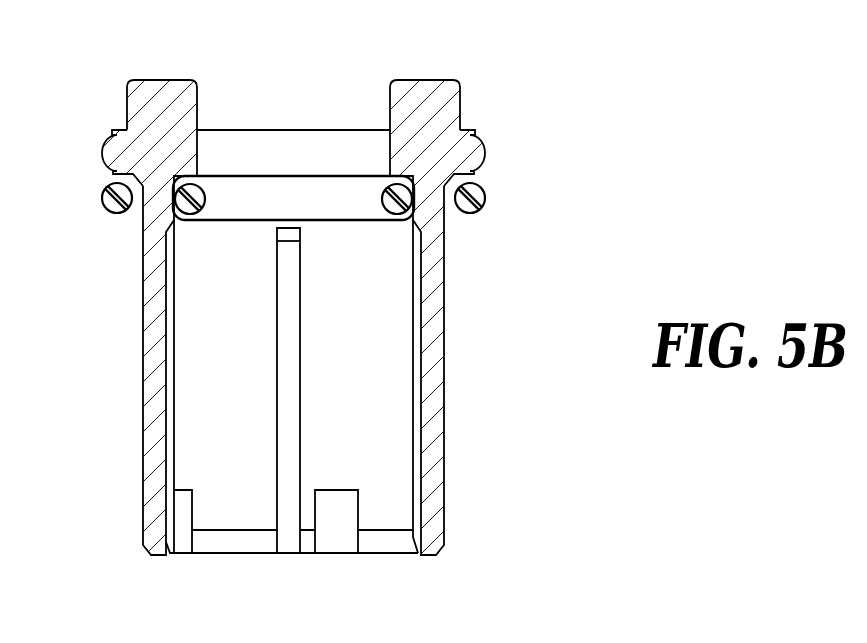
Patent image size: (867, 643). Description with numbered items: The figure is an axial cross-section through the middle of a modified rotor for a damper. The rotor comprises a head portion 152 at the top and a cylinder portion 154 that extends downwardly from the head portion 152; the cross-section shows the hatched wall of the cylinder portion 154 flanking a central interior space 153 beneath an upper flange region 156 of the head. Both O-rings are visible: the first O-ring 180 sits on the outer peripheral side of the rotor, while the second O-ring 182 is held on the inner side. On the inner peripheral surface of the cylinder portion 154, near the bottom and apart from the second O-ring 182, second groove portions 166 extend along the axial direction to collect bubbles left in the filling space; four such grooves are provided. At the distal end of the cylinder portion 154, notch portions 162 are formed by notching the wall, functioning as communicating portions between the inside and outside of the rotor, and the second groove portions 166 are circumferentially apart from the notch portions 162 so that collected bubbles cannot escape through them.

The head portion 152 is at (473, 131).
The cavity 153 is at (333, 143).
The cylinder portion 154 is at (433, 408).
The flange 156 is at (421, 85).
The notch portions 162 is at (185, 528).
The second groove portions 166 is at (172, 362).
The first O-ring 180 is at (485, 198).
The second O-ring 182 is at (245, 195).